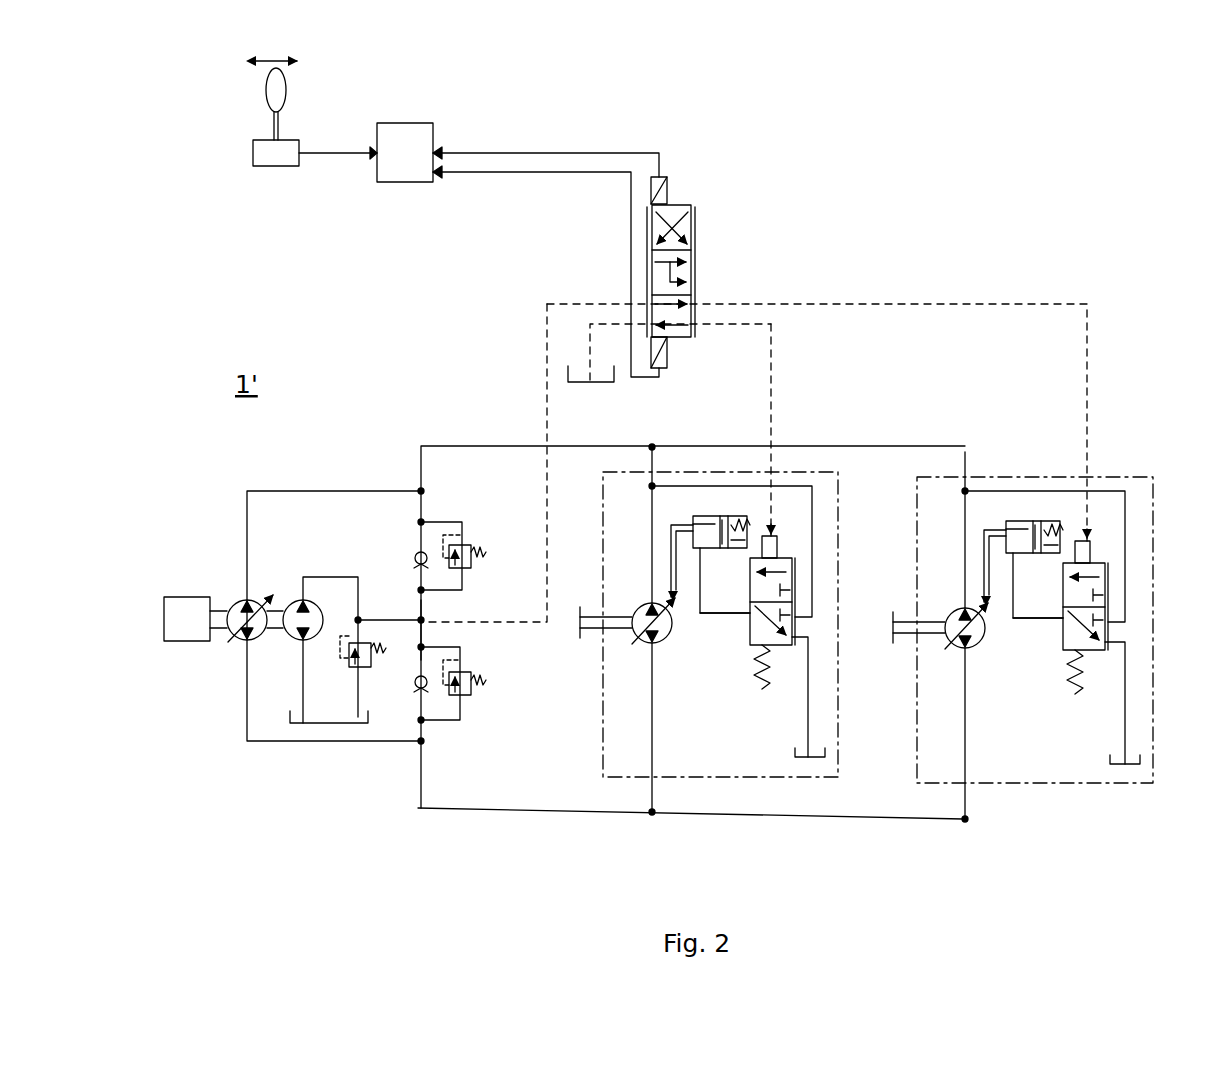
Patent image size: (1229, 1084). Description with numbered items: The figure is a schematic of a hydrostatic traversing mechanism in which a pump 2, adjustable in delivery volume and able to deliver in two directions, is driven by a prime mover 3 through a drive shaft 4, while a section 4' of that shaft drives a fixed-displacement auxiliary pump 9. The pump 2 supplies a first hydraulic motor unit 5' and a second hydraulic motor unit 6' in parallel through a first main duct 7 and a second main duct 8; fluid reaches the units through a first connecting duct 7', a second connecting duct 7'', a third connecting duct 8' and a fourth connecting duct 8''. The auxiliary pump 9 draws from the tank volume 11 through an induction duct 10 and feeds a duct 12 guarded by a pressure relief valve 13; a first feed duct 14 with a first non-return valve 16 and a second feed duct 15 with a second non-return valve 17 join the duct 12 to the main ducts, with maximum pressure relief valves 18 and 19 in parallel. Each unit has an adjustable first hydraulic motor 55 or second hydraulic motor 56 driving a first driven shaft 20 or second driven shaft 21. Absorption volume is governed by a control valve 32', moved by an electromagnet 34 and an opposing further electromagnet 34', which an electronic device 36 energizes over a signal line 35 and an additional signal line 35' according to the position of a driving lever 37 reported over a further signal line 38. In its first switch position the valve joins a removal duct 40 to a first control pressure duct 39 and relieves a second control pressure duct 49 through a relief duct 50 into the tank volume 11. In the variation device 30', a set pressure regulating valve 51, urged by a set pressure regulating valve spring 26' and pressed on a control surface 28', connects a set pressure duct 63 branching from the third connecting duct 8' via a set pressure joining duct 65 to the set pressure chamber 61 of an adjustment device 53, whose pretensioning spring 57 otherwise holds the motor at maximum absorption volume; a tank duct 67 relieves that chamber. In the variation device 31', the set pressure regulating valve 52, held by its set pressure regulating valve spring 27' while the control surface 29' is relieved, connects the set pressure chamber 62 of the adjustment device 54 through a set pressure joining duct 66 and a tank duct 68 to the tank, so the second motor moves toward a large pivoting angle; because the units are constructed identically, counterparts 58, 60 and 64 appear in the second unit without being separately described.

The pump 2 is at (237, 636).
The prime mover 3 is at (164, 620).
The drive shaft 4 is at (220, 597).
The section of the drive shaft 4' is at (276, 647).
The first hydraulic motor unit 5' is at (1014, 675).
The second hydraulic motor unit 6' is at (701, 670).
The first main duct 7 is at (654, 834).
The first connecting duct 7' is at (990, 749).
The second connecting duct 7'' is at (678, 745).
The second main duct 8 is at (654, 602).
The third connecting duct 8' is at (980, 505).
The fourth connecting duct 8'' is at (668, 501).
The auxiliary pump 9 is at (293, 606).
The induction duct 10 is at (302, 690).
The tank volume 11 is at (592, 383).
The duct 12 is at (328, 577).
The pressure relief valve 13 is at (352, 670).
The first feed duct 14 is at (422, 630).
The second feed duct 15 is at (422, 505).
The first non-return valve 16 is at (416, 688).
The second non-return valve 17 is at (414, 556).
The maximum pressure relief valve 18 is at (472, 692).
The maximum pressure relief valve 19 is at (472, 568).
The first driven shaft 20 is at (903, 640).
The second driven shaft 21 is at (590, 635).
The set pressure regulating valve spring 26' is at (1079, 703).
The set pressure regulating valve spring 27' is at (767, 698).
The control surface 28' is at (1110, 523).
The control surface 29' is at (796, 518).
The variation device 30' is at (1035, 660).
The variation device 31' is at (720, 681).
The control valve 32' is at (715, 271).
The electromagnet 34 is at (690, 183).
The further electromagnet 34' is at (695, 359).
The signal line 35 is at (546, 133).
The additional signal line 35' is at (546, 274).
The electronic device 36 is at (412, 125).
The driving lever 37 is at (235, 126).
The further signal line 38 is at (330, 155).
The first control pressure duct 39 is at (935, 303).
The removal duct 40 is at (547, 356).
The second control pressure duct 49 is at (773, 370).
The relief duct 50 is at (590, 345).
The set pressure regulating valve 51 is at (1111, 577).
The set pressure regulating valve 52 is at (798, 572).
The adjustment device 53 is at (1035, 517).
The adjustment device 54 is at (722, 512).
The first hydraulic motor 55 is at (951, 613).
The second hydraulic motor 56 is at (638, 608).
The pretensioning spring 57 is at (1051, 519).
The spring of adjusting device 58 is at (738, 514).
The adjusting device 60 is at (722, 550).
The set pressure chamber 61 is at (1006, 527).
The set pressure chamber 62 is at (693, 522).
The set pressure duct 63 is at (1125, 594).
The connecting line 64 is at (812, 588).
The set pressure joining duct 65 is at (1033, 621).
The set pressure joining duct 66 is at (720, 616).
The tank duct 67 is at (1127, 693).
The tank duct 68 is at (810, 688).